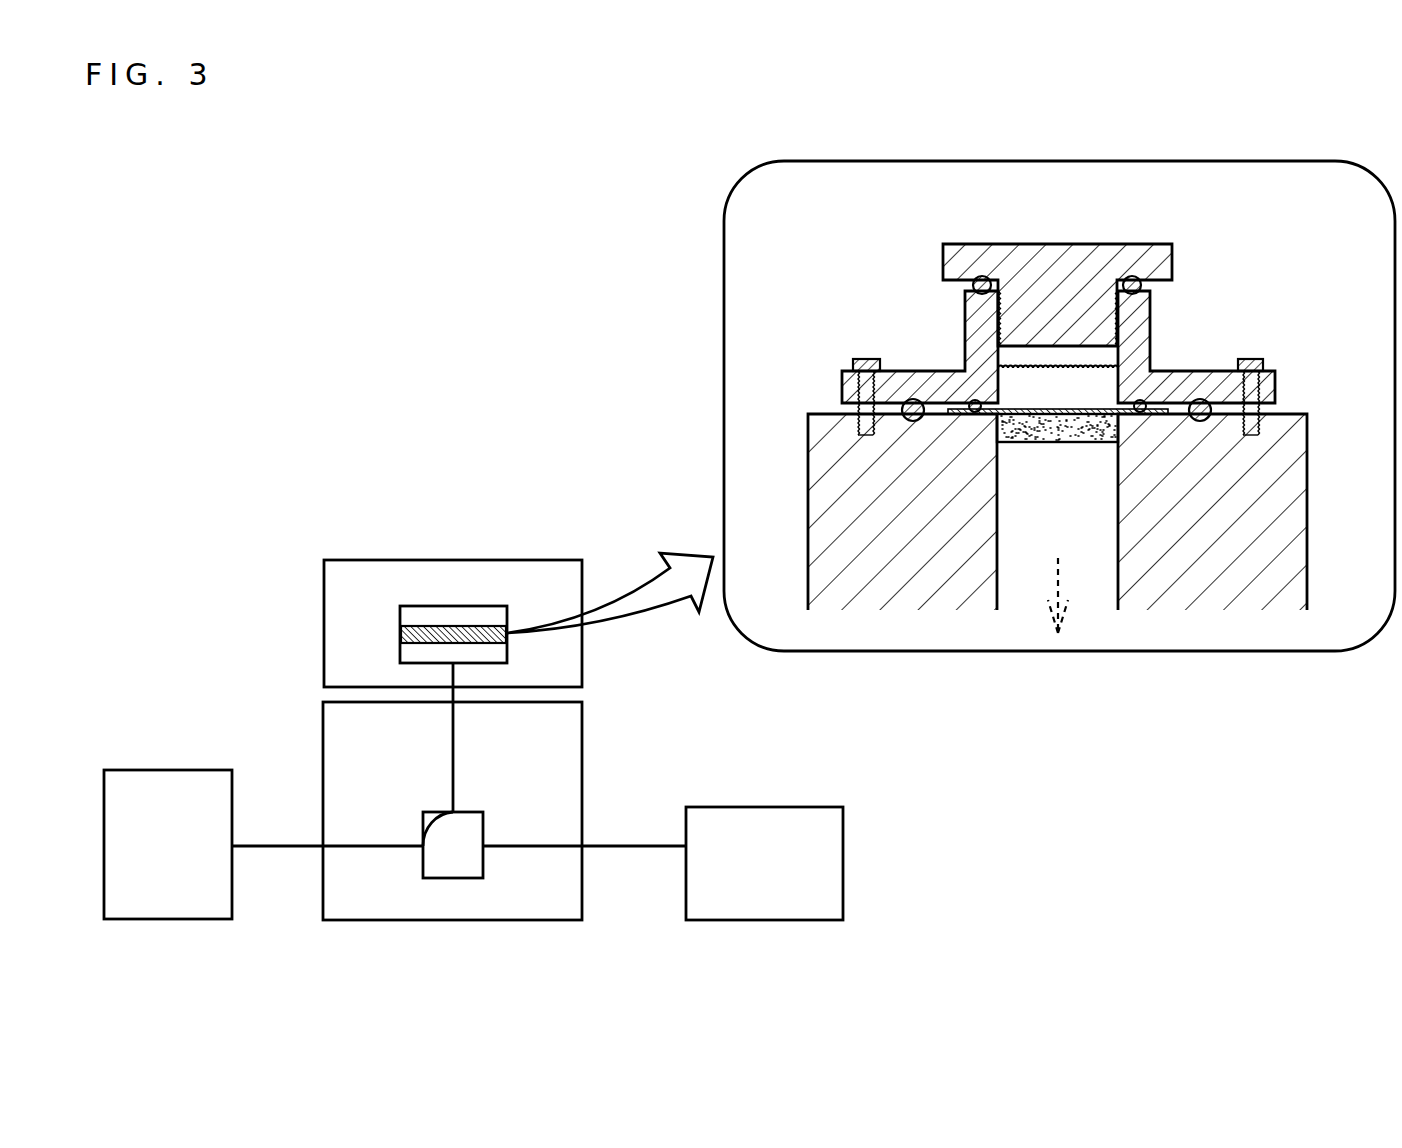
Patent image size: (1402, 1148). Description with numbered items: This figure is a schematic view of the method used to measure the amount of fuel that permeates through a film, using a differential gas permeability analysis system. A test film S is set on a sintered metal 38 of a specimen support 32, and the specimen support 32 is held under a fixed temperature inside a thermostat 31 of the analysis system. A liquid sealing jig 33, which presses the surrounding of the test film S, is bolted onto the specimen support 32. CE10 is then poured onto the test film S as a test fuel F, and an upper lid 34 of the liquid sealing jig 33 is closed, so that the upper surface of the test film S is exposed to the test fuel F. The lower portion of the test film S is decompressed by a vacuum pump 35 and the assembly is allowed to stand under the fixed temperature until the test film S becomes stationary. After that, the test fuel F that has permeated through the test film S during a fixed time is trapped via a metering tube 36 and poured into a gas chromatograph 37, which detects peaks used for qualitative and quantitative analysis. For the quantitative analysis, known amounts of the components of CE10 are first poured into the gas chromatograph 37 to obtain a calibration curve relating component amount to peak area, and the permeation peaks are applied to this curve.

The thermostat 31 is at (377, 568).
The specimen support 32 is at (823, 410).
The liquid sealing jig 33 is at (973, 338).
The upper lid 34 is at (1003, 250).
The vacuum pump 35 is at (792, 817).
The metering tube 36 is at (473, 810).
The gas chromatograph 37 is at (180, 778).
The sintered metal 38 is at (1060, 437).
The test film S is at (400, 634).
The test fuel F is at (1078, 392).